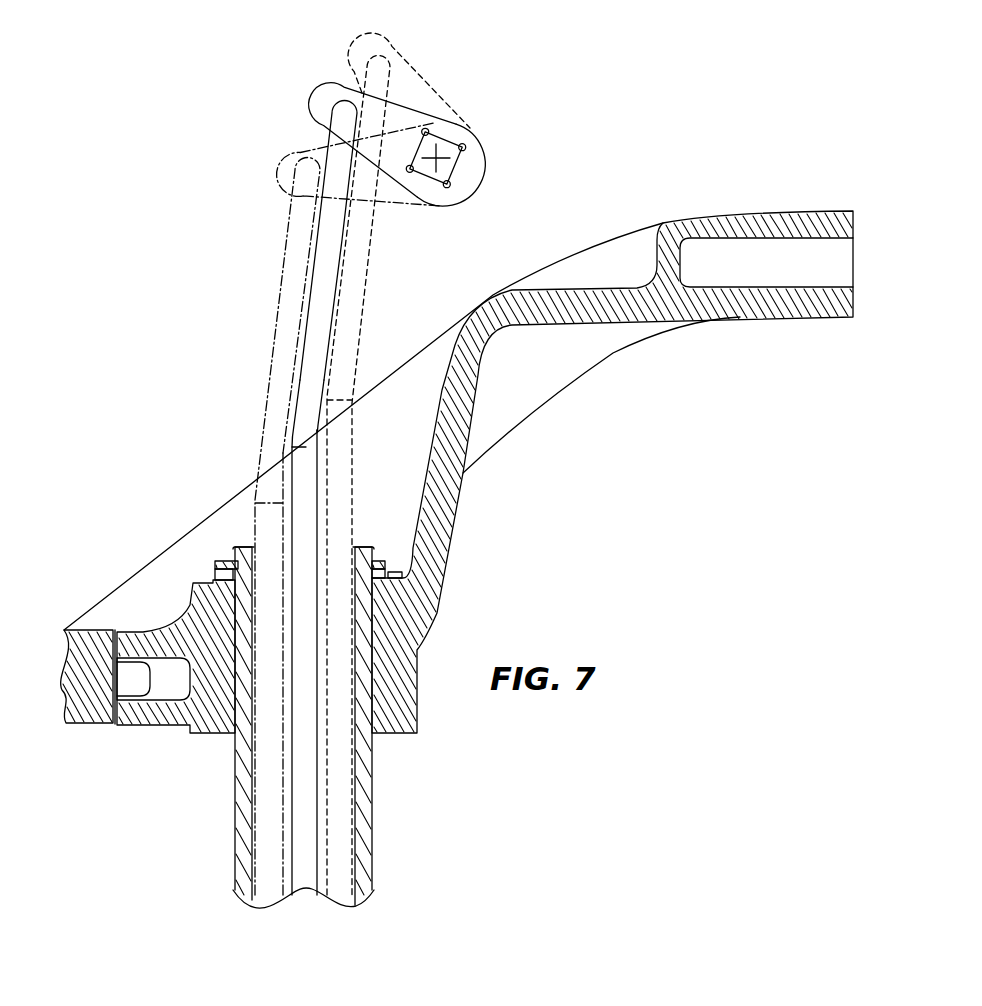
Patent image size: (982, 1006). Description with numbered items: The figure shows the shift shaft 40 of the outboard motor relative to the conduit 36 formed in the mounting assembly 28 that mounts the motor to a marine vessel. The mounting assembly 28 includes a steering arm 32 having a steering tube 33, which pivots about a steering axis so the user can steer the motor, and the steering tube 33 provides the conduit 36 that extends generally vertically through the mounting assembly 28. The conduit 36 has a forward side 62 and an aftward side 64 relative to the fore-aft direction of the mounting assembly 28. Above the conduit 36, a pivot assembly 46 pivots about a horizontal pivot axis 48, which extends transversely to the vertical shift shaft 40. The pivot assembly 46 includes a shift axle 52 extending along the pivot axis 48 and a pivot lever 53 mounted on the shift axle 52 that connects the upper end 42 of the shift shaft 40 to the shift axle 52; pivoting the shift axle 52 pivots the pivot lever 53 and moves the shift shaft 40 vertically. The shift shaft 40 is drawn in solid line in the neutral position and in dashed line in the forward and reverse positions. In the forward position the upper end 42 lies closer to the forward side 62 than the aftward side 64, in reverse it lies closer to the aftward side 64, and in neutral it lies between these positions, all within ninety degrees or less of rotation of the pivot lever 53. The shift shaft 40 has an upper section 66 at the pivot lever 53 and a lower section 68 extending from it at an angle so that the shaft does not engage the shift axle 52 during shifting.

The mounting assembly 28 is at (730, 428).
The steering arm 32 is at (208, 813).
The steering tube 33 is at (367, 798).
The conduit 36 is at (266, 895).
The shift shaft 40 is at (303, 855).
The upper end 42 is at (342, 117).
The pivot assembly 46 is at (492, 125).
The pivot axis 48 is at (446, 152).
The shift axle 52 is at (458, 168).
The pivot lever 53 is at (411, 104).
The forward side 62 is at (356, 546).
The aftward side 64 is at (250, 545).
The upper section 66 is at (328, 268).
The lower section 68 is at (303, 497).